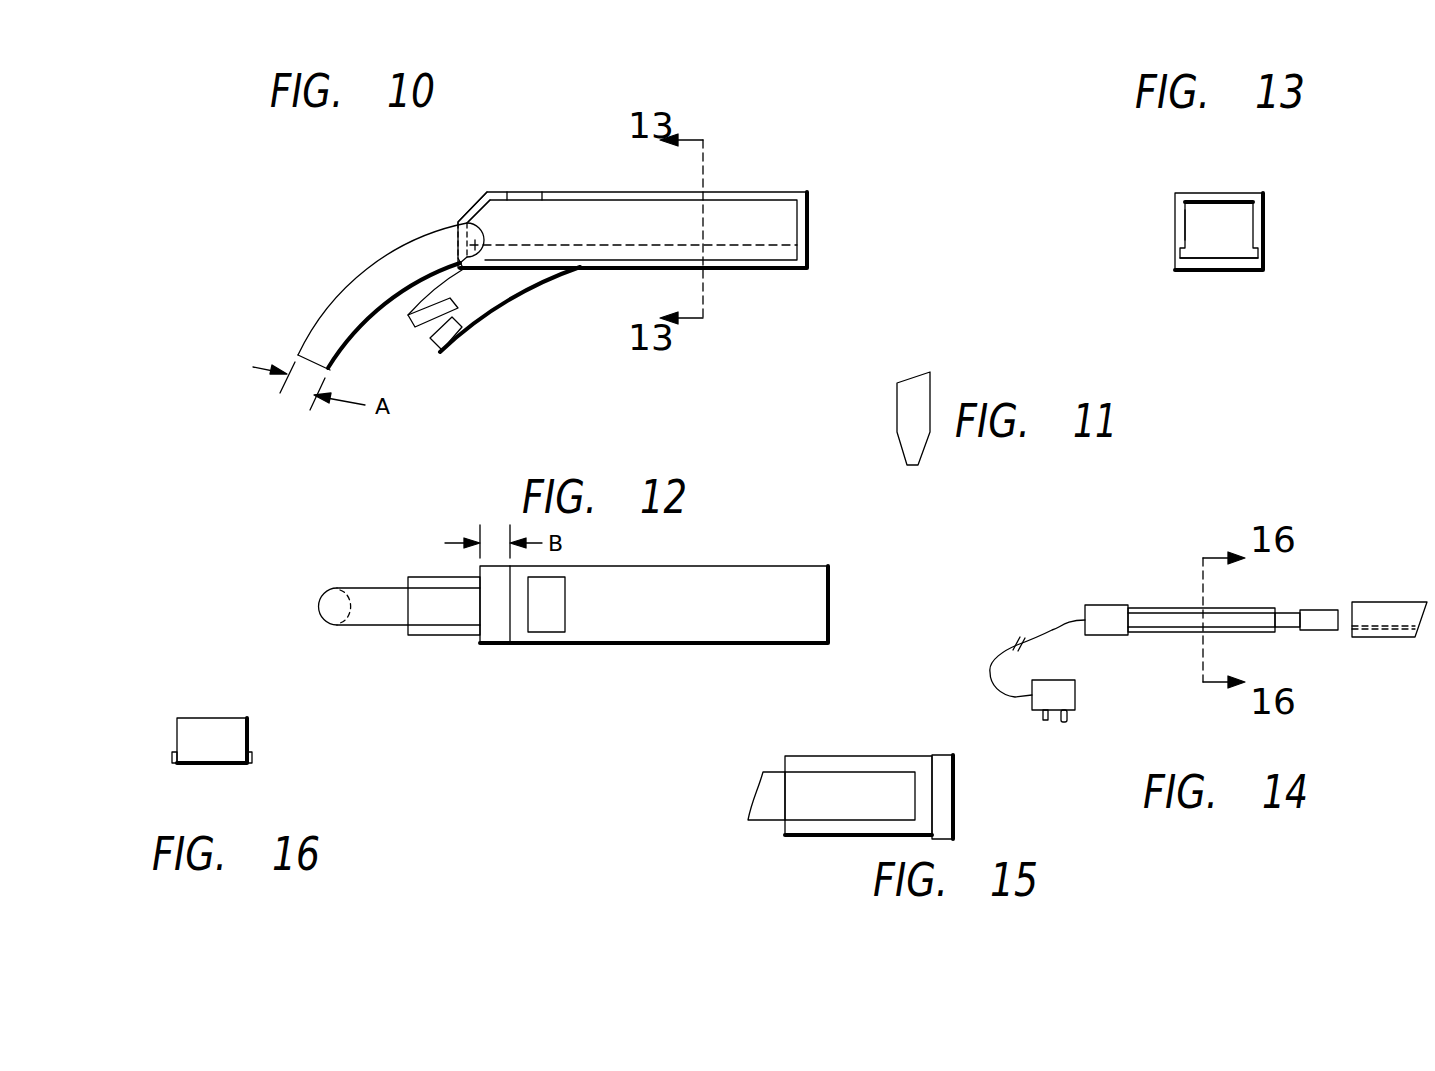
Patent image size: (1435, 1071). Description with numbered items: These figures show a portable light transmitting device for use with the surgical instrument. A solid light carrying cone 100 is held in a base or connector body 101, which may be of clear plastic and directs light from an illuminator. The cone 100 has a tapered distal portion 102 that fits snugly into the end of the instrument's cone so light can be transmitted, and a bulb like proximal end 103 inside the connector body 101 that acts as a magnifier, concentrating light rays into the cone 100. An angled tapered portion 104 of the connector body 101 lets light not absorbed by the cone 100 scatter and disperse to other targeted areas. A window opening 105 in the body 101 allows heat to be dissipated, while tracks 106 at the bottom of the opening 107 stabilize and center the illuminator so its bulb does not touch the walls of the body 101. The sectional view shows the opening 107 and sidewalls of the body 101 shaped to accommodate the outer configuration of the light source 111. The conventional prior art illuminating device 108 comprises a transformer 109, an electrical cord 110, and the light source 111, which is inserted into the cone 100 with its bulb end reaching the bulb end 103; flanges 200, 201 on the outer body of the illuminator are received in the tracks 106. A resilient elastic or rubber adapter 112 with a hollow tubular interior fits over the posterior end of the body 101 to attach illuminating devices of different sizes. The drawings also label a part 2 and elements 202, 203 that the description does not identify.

In FIG. 12, the rod 2 is at (402, 610).
In FIG. 10, the light carrying cone 100 is at (352, 293).
In FIG. 10, the connector body 101 is at (737, 270).
In FIG. 12, the connector body 101 is at (767, 625).
In FIG. 13, the connector body 101 is at (1258, 222).
In FIG. 15, the connector body 101 is at (777, 807).
In FIG. 11, the tapered distal portion 102 is at (915, 442).
In FIG. 10, the bulb like proximal end 103 is at (475, 252).
In FIG. 10, the tapered portion of the connector body 104 is at (467, 205).
In FIG. 10, the window opening 105 is at (523, 192).
In FIG. 12, the window opening 105 is at (550, 617).
In FIG. 13, the tracks 106 is at (1187, 265).
In FIG. 14, the tracks 106 is at (1383, 637).
In FIG. 10, the opening 107 is at (615, 223).
In FIG. 13, the opening 107 is at (1218, 242).
In FIG. 14, the illuminating device 108 is at (1342, 733).
In FIG. 16, the illuminating device 108 is at (213, 714).
In FIG. 14, the transformer 109 is at (1075, 693).
In FIG. 14, the electrical cord 110 is at (1053, 625).
In FIG. 14, the light source 111 is at (1320, 610).
In FIG. 15, the adapter 112 is at (832, 836).
In FIG. 16, the flange 200 is at (172, 758).
In FIG. 16, the flange 201 is at (252, 757).
In FIG. 10, the sleeve 202 is at (460, 310).
In FIG. 12, the sleeve 202 is at (448, 627).
In FIG. 10, the clip 203 is at (422, 333).